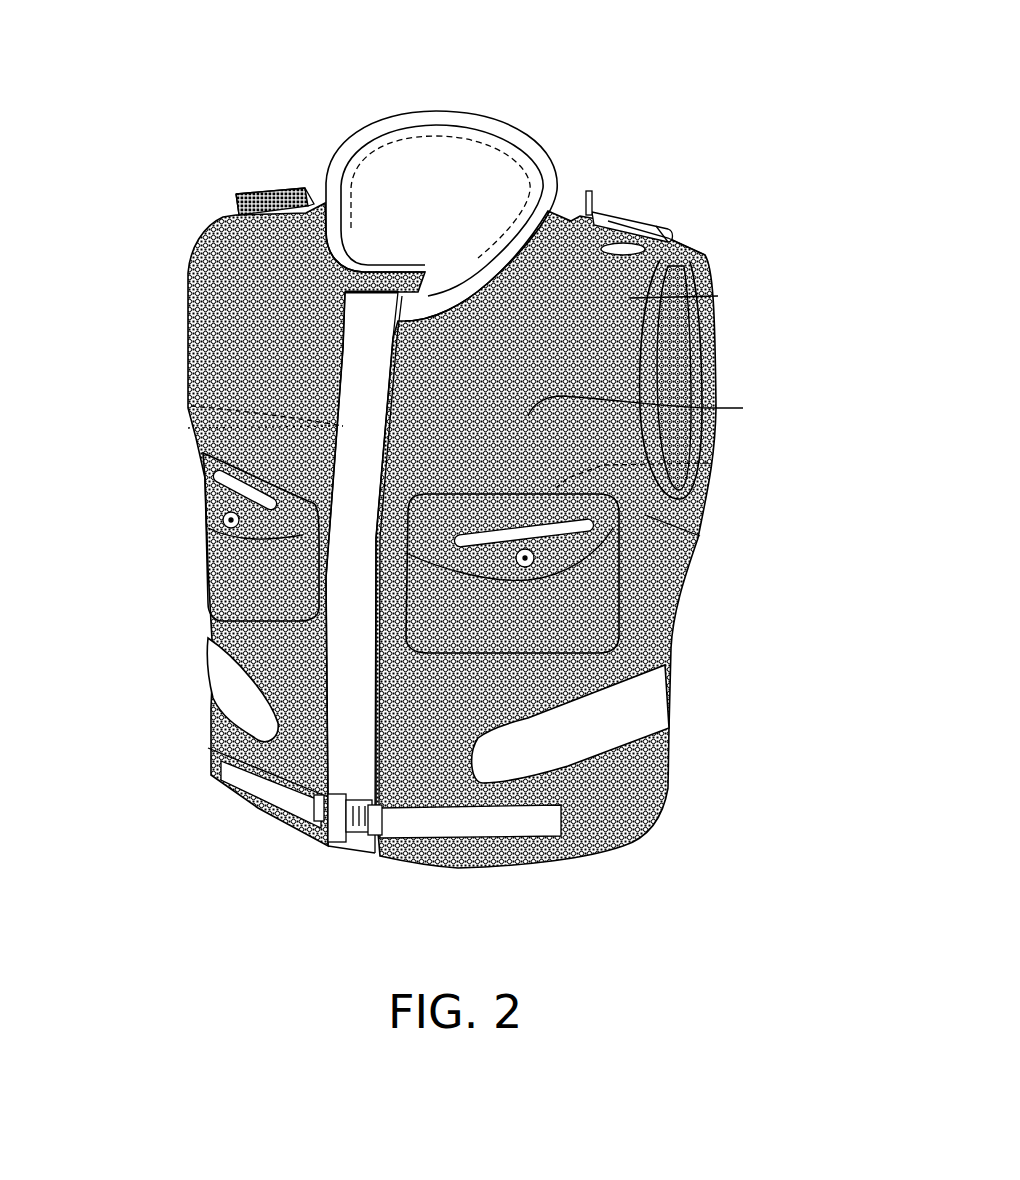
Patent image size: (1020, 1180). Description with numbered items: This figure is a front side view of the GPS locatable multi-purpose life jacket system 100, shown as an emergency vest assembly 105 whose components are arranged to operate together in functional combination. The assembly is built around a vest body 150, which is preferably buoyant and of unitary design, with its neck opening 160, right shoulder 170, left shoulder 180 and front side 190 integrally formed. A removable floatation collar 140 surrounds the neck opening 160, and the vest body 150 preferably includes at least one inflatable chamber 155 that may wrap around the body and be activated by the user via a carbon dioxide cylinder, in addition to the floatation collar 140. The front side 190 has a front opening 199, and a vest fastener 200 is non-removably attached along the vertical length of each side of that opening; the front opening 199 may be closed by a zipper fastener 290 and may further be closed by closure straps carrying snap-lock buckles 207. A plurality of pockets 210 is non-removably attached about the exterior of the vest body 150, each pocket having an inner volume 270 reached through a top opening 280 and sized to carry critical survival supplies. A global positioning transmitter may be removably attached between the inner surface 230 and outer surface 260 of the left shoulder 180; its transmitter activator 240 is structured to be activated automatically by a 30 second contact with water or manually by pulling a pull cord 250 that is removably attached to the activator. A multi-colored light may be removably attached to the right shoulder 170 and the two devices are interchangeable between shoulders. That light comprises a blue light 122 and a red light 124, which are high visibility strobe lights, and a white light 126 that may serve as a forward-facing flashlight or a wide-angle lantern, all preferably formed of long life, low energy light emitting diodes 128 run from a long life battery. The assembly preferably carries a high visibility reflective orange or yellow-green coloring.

The garment 100 is at (416, 444).
The emergency vest assembly 105 is at (675, 100).
The shoulder strap 30 is at (623, 210).
The transmitter activator 240 is at (648, 216).
The left shoulder 180 is at (677, 237).
The vest body 150 is at (710, 288).
The inner surface 230 is at (670, 356).
The front side 190 is at (735, 400).
The top opening 280 is at (700, 455).
The outer surface 260 is at (692, 528).
The pockets 210 is at (612, 583).
The inner volume 270 is at (660, 658).
The inflatable chamber 155 is at (662, 670).
The snap-lock buckles 207 is at (205, 762).
The front opening 199 is at (298, 751).
The vest fastener 200 is at (362, 552).
The zipper fastener 290 is at (180, 420).
The right shoulder 170 is at (175, 215).
The light emitting diodes 128 is at (207, 152).
The blue light 122 is at (225, 185).
The red light 124 is at (232, 183).
The white light 126 is at (290, 178).
The removable floatation collar 140 is at (441, 177).
The neck opening 160 is at (404, 162).
The pull cord 250 is at (570, 185).